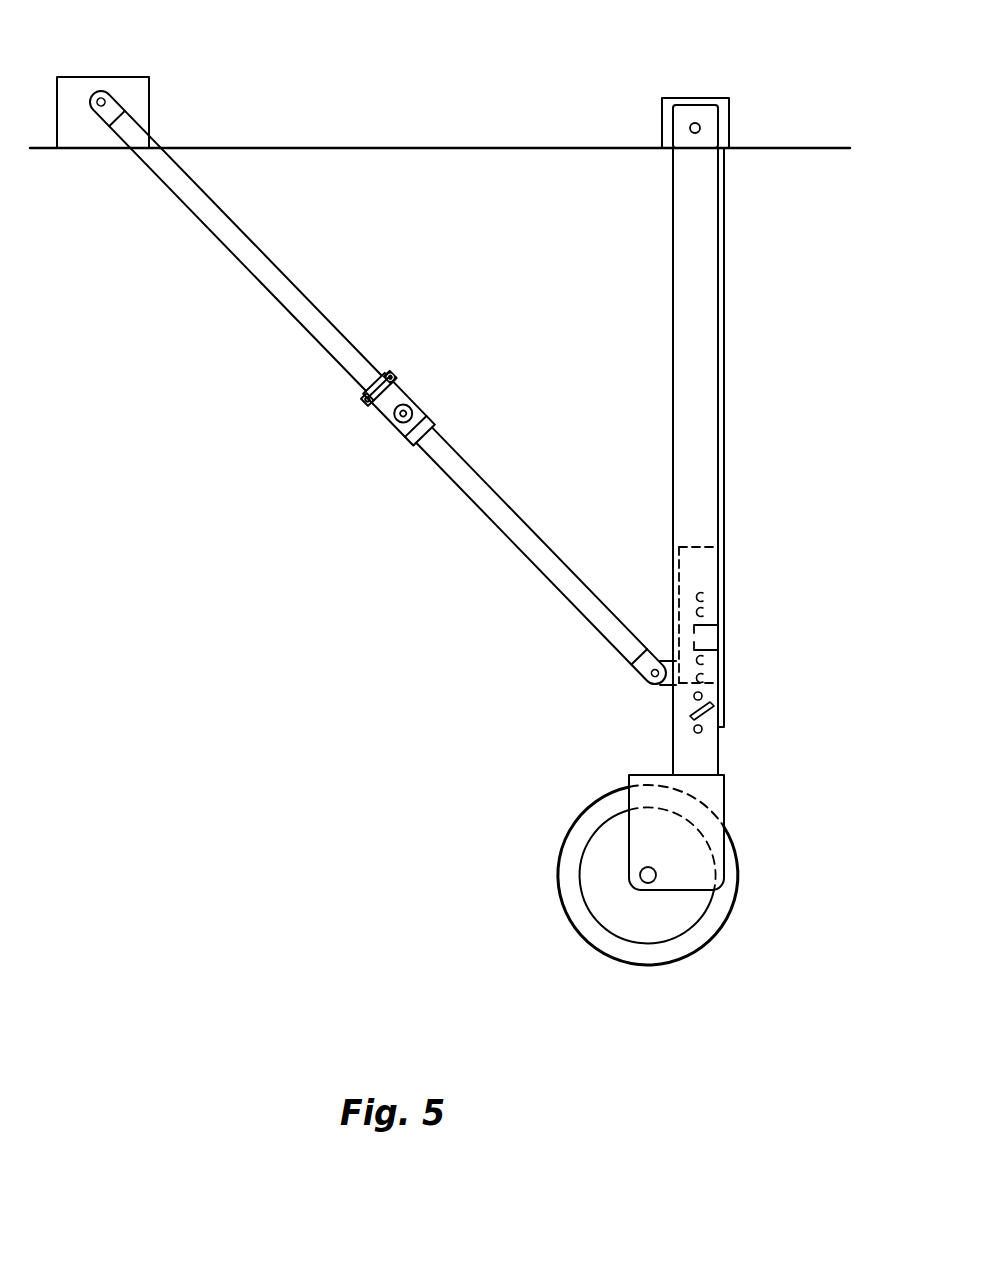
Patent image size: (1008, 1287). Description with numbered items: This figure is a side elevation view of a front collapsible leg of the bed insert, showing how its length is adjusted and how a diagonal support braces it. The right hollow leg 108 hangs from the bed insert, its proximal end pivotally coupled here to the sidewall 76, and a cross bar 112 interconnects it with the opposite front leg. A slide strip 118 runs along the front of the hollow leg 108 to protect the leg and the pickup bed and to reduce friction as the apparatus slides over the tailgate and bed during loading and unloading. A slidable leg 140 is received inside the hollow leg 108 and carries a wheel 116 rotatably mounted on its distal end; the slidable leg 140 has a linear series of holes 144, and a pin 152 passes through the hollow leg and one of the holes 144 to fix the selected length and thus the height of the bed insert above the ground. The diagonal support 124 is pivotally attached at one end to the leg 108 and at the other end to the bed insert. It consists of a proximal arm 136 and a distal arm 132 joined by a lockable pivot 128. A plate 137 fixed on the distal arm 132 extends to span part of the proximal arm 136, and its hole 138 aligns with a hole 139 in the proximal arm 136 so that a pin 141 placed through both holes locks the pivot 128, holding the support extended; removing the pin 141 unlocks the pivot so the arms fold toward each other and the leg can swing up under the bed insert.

The sidewall 76 is at (806, 148).
The right hollow leg 108 is at (692, 217).
The cross bar 112 is at (708, 622).
The wheel 116 is at (570, 883).
The slide strip 118 is at (725, 258).
The diagonal support 124 is at (386, 246).
The lockable pivot 128 is at (398, 422).
The distal arm 132 is at (515, 527).
The proximal arm 136 is at (280, 291).
The plate 137 is at (435, 420).
The hole 138 is at (390, 372).
The hole 139 is at (370, 395).
The slidable leg 140 is at (683, 730).
The pin 141 is at (397, 370).
The holes 144 is at (703, 731).
The pin 152 is at (714, 705).